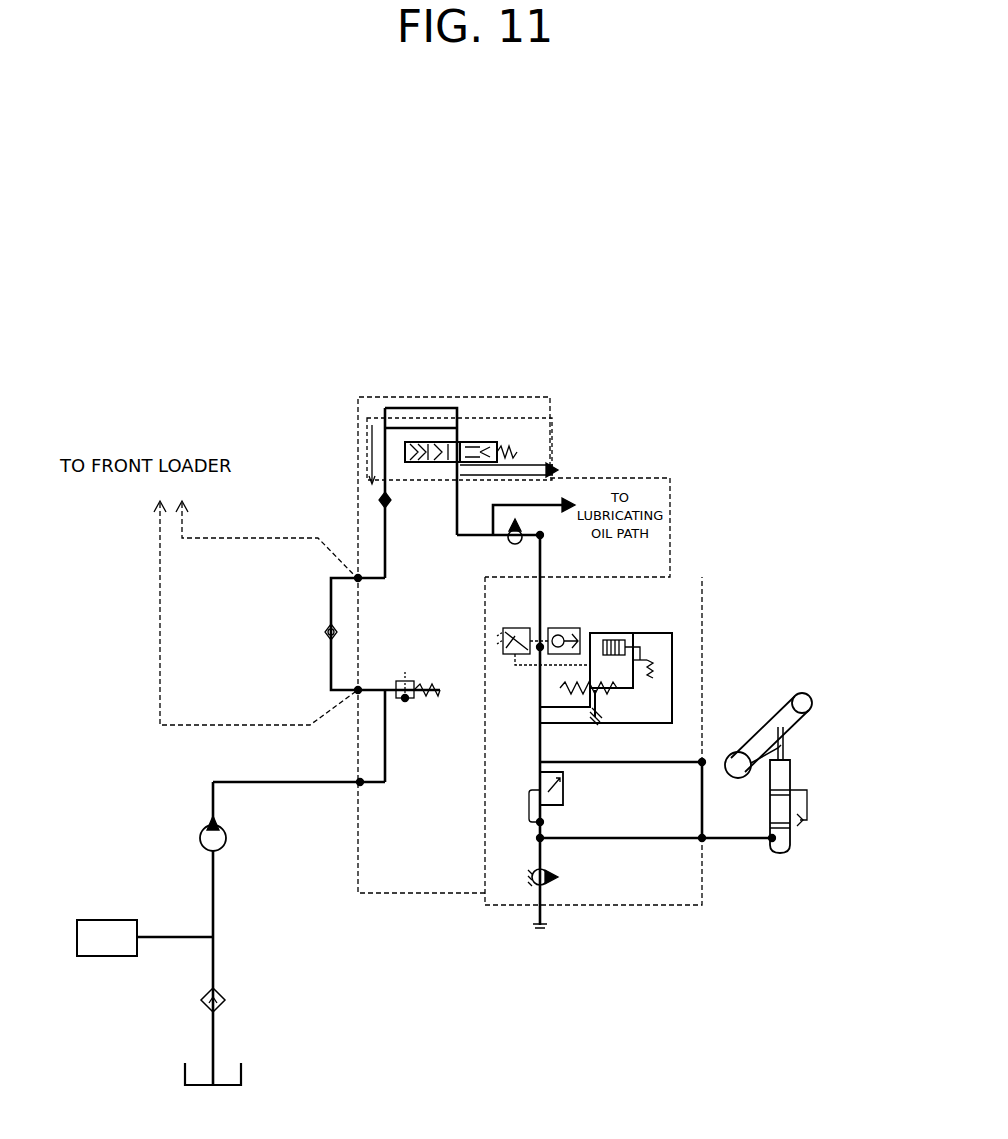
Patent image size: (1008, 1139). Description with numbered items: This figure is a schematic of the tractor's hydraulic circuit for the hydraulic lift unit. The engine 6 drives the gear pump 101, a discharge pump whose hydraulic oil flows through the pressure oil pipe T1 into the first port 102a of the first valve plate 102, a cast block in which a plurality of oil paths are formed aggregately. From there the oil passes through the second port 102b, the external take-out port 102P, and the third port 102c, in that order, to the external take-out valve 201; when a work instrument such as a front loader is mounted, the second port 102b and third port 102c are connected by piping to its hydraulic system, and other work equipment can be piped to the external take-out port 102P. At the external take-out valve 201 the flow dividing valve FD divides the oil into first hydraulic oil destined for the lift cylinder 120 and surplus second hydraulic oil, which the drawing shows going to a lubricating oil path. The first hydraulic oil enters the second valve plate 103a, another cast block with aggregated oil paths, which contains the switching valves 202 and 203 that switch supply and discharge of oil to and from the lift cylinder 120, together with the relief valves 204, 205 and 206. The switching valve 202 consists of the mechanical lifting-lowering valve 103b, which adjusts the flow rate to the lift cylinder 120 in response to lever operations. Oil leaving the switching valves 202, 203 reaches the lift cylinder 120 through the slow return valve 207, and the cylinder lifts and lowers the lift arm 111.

The engine 6 is at (103, 960).
The gear pump 101 is at (199, 838).
The first valve plate 102 is at (395, 895).
The first port 102a is at (358, 803).
The second port 102b is at (340, 707).
The third port 102c is at (356, 566).
The external take-out port 102P is at (324, 634).
The second valve plate 103a is at (627, 907).
The mechanical lifting-lowering valve 103b is at (654, 678).
The lift arm 111 is at (797, 684).
The lift cylinder 120 is at (800, 836).
The external take-out valve 201 is at (496, 437).
The switching valve 202 is at (625, 700).
The switching valve 203 is at (637, 626).
The relief valve 204 is at (566, 627).
The relief valve 205 is at (518, 662).
The relief valve 206 is at (564, 877).
The slow return valve 207 is at (566, 786).
The pressure oil pipe T1 is at (290, 781).
The flow dividing valve FD is at (503, 546).